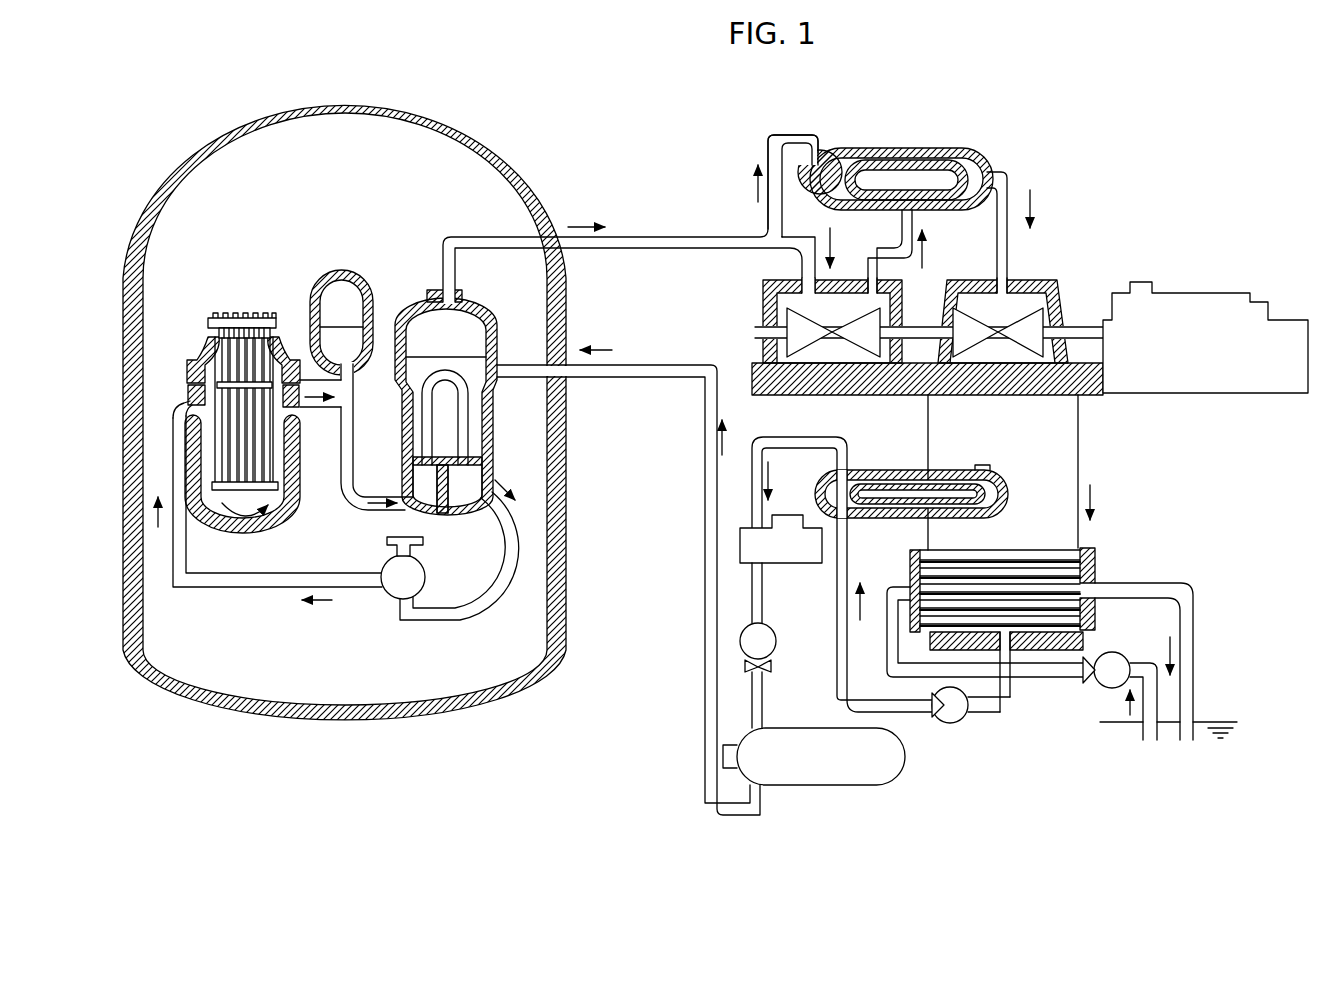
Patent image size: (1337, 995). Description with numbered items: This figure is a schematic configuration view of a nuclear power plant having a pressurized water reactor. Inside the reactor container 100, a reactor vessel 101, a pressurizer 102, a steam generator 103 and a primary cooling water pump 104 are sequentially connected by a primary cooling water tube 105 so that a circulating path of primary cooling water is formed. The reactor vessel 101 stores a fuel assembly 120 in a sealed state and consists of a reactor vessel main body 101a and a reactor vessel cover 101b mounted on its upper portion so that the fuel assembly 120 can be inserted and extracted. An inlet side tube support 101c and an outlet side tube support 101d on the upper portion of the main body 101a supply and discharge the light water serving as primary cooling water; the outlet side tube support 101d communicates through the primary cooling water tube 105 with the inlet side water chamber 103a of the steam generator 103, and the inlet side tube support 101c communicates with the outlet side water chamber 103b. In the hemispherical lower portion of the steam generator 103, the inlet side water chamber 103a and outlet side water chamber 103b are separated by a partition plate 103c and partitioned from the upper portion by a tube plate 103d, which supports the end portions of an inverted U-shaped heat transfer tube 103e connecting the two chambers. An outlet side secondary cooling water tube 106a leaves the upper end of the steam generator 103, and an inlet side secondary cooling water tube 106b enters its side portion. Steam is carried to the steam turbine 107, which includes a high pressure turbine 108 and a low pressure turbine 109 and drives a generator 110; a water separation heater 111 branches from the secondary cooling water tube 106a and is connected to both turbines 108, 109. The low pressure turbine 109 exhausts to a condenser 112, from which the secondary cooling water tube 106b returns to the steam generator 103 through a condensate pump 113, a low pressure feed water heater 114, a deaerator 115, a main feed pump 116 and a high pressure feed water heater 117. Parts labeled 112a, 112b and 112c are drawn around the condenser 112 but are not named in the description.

The reactor container 100 is at (214, 128).
The reactor vessel 101 is at (210, 320).
The reactor vessel main body 101a is at (256, 533).
The reactor vessel cover 101b is at (287, 340).
The inlet side tube support 101c is at (186, 397).
The outlet side tube support 101d is at (294, 432).
The pressurizer 102 is at (340, 268).
The steam generator 103 is at (415, 300).
The inlet side water chamber 103a is at (412, 492).
The outlet side water chamber 103b is at (457, 496).
The partition plate 103c is at (468, 506).
The tube plate 103d is at (417, 431).
The heat transfer tube 103e is at (450, 388).
The primary cooling water pump 104 is at (390, 599).
The primary cooling water tube 105 is at (355, 436).
The outlet side secondary cooling water tube 106a is at (670, 237).
The inlet side secondary cooling water tube 106b is at (705, 708).
The steam turbine 107 is at (750, 318).
The high pressure turbine 108 is at (760, 277).
The low pressure turbine 109 is at (1048, 282).
The generator 110 is at (1262, 292).
The water separation heater 111 is at (864, 145).
The condenser 112 is at (1082, 458).
The condenser 112a is at (890, 586).
The circulating water pump 112b is at (1110, 652).
The circulating water pipe 112c is at (1195, 620).
The condensate pump 113 is at (972, 720).
The low pressure feed water heater 114 is at (876, 468).
The deaerator 115 is at (787, 522).
The main feed pump 116 is at (776, 627).
The high pressure feed water heater 117 is at (800, 727).
The fuel assembly 120 is at (288, 522).